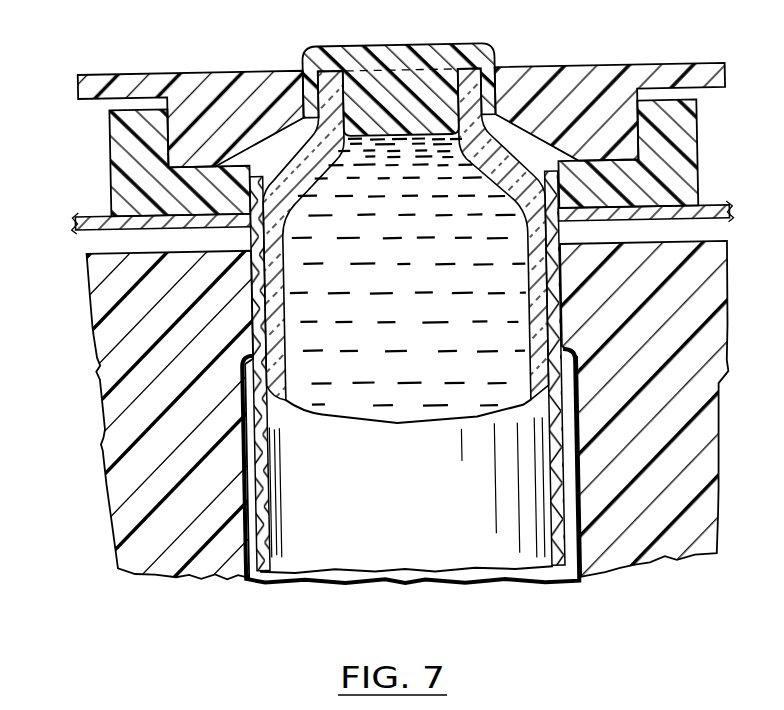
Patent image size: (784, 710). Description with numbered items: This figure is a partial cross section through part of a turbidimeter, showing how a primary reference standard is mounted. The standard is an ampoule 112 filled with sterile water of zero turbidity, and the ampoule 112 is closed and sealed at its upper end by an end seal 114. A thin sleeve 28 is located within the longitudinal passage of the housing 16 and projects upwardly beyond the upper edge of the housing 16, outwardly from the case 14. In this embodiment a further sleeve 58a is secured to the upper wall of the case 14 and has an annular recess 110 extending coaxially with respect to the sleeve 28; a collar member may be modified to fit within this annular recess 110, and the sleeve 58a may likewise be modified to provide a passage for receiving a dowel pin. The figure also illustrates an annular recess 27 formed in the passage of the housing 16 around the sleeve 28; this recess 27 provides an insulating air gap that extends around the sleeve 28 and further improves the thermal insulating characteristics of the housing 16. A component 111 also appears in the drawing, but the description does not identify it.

The annular recess 110 is at (173, 113).
The upper die block 111 is at (582, 81).
The end seal 114 is at (315, 51).
The sleeve 58a is at (120, 162).
The case 14 is at (84, 225).
The housing 16 is at (106, 341).
The annular recess 27 is at (244, 460).
The sleeve 28 is at (252, 537).
The ampoule 112 is at (482, 549).